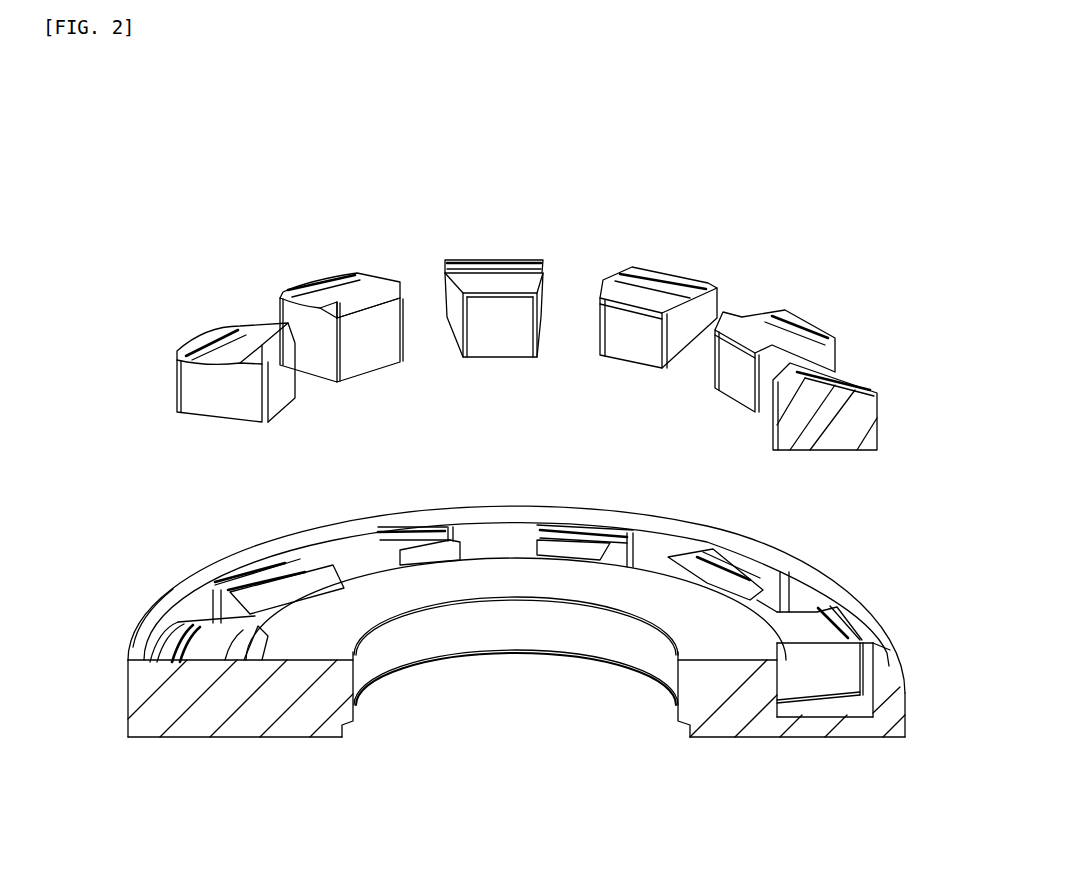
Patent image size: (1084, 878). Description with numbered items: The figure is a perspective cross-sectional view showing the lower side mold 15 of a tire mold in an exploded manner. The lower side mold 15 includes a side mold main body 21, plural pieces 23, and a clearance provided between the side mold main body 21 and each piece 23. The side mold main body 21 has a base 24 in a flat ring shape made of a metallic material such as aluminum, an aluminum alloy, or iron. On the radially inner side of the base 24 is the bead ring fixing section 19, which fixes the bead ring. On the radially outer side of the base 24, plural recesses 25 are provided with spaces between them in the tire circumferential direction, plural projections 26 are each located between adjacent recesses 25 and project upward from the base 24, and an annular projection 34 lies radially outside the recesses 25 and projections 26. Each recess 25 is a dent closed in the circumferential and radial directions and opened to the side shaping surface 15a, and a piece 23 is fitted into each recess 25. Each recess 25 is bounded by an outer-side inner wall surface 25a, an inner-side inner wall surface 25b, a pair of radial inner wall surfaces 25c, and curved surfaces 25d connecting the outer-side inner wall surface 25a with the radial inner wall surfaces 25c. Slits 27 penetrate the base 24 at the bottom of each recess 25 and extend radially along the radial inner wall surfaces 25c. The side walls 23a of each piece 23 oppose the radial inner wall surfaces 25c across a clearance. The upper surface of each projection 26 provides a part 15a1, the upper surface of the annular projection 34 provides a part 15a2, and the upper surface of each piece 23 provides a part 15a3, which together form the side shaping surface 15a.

The lower side mold 15 is at (552, 65).
The side shaping surface 15a is at (501, 486).
The part of the side shaping surface 15a1 is at (890, 576).
The part of the side shaping surface 15a2 is at (150, 634).
The part of the side shaping surface 15a3 is at (866, 392).
The bead ring fixing section 19 is at (667, 612).
The side mold main body 21 is at (278, 742).
The piece 23 is at (273, 387).
The side wall 23a is at (223, 392).
The base 24 is at (377, 662).
The recess 25 is at (227, 613).
The outer-side inner wall surface 25a is at (862, 675).
The inner-side inner wall surface 25b is at (808, 672).
The radial inner wall surface 25c is at (835, 665).
The curved surface 25d is at (875, 670).
The projection 26 is at (260, 587).
The slit 27 is at (830, 688).
The annular projection 34 is at (200, 570).